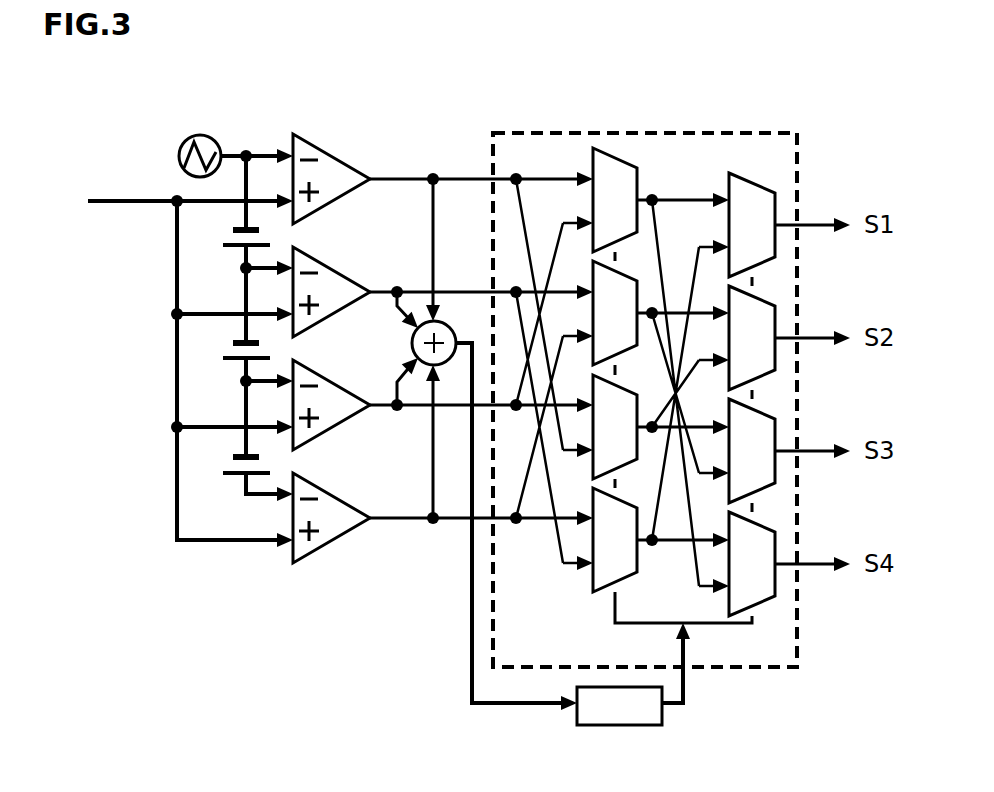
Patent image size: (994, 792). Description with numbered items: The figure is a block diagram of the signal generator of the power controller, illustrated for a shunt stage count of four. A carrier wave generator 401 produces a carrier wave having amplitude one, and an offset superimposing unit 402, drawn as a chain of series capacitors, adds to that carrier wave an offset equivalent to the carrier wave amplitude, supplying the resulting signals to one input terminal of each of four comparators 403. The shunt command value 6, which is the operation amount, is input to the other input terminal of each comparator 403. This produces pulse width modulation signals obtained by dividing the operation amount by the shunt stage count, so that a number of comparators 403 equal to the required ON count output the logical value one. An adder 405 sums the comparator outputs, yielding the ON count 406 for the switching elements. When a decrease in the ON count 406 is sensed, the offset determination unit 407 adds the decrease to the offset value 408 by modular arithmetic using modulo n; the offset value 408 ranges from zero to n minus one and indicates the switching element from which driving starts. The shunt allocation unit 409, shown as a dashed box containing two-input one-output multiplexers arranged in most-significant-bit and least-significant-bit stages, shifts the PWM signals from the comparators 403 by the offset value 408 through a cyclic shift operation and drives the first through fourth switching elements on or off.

The shunt command value 6 is at (113, 199).
The carrier wave generator 401 is at (185, 141).
The offset superimposing unit 402 is at (233, 250).
The comparator 403 is at (289, 132).
The adder 405 is at (410, 348).
The ON count 406 is at (467, 605).
The offset determination unit 407 is at (578, 730).
The offset value 408 is at (688, 697).
The shunt allocation unit 409 is at (507, 130).